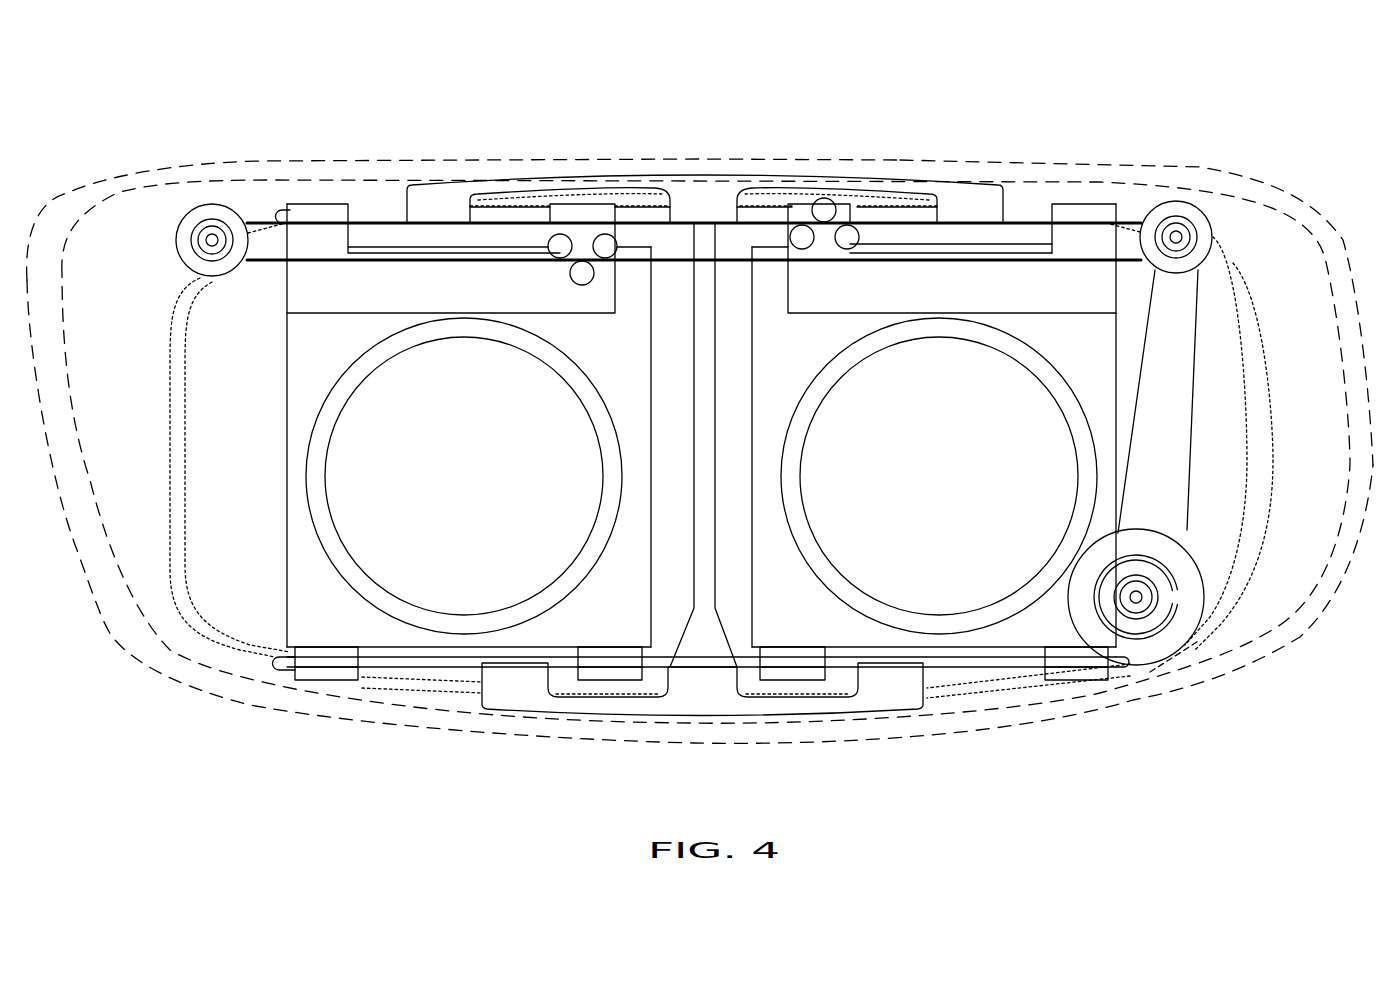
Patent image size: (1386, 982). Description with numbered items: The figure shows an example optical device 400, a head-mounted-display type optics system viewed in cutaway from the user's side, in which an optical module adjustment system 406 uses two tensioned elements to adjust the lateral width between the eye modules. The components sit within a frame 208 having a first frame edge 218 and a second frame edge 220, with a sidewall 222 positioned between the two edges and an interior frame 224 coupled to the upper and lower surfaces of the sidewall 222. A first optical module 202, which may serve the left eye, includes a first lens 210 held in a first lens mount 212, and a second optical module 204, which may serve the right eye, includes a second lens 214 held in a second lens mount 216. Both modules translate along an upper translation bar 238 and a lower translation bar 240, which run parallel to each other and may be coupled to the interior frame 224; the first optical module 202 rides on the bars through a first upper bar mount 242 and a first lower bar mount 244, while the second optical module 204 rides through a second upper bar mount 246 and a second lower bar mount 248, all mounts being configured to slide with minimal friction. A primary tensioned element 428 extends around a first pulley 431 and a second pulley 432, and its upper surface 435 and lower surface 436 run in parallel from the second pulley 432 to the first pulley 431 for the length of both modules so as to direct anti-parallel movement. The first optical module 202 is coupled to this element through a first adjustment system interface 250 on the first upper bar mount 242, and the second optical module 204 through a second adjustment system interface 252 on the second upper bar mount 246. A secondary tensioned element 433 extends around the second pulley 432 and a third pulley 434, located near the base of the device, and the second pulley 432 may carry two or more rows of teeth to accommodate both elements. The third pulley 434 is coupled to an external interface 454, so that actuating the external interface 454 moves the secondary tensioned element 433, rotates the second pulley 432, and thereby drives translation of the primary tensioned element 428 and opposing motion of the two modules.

The optical device 400 is at (990, 52).
The frame 208 is at (108, 138).
The optical module adjustment system 406 is at (1205, 136).
The first frame edge 218 is at (66, 515).
The sidewall 222 is at (119, 373).
The second frame edge 220 is at (170, 443).
The interior frame 224 is at (719, 207).
The upper surface 435 is at (430, 220).
The upper translation bar 238 is at (1017, 222).
The first pulley 431 is at (176, 234).
The second pulley 432 is at (1208, 212).
The third pulley 434 is at (1194, 558).
The secondary tensioned element 433 is at (1197, 368).
The primary tensioned element 428 is at (277, 266).
The first optical module 202 is at (282, 445).
The first upper bar mount 242 is at (334, 302).
The lower surface 436 is at (492, 263).
The first adjustment system interface 250 is at (565, 276).
The first lens 210 is at (471, 481).
The first lens mount 212 is at (625, 613).
The first lower bar mount 244 is at (320, 640).
The second optical module 204 is at (1124, 386).
The second upper bar mount 246 is at (1097, 302).
The second adjustment system interface 252 is at (824, 227).
The second lens 214 is at (959, 481).
The second lens mount 216 is at (1055, 643).
The second lower bar mount 248 is at (777, 640).
The lower translation bar 240 is at (432, 662).
The external interface 454 is at (1183, 657).